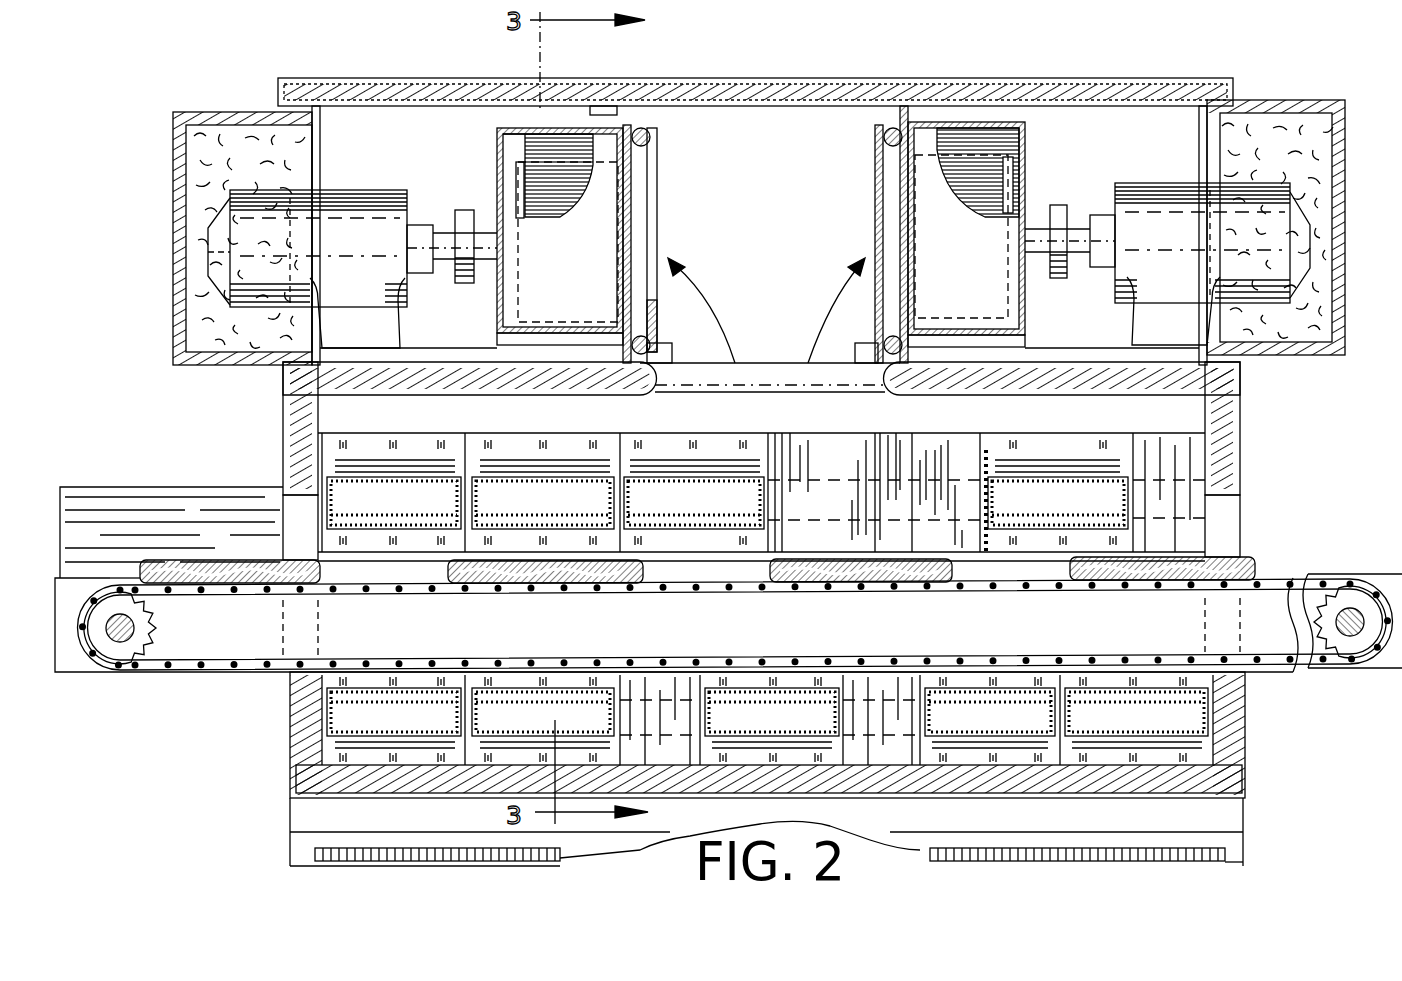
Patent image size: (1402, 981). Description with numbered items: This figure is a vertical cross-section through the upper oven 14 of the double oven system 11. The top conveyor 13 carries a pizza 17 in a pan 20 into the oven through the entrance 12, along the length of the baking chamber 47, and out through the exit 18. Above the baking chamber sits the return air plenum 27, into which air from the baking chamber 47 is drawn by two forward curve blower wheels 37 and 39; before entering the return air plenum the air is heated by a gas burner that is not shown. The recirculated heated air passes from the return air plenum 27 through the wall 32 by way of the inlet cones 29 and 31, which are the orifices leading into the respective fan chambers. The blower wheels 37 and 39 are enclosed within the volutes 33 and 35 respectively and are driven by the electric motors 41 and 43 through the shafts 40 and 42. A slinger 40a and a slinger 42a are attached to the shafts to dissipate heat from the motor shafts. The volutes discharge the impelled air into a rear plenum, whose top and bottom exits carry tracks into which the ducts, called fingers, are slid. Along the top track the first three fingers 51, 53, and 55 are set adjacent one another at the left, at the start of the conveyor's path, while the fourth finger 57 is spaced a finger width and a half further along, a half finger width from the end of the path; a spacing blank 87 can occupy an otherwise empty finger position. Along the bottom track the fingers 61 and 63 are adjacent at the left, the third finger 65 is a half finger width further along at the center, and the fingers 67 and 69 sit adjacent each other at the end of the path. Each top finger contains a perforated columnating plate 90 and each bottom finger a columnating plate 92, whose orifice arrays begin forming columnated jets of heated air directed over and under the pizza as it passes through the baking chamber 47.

The double oven system 11 is at (372, 78).
The entrance 12 is at (303, 520).
The top conveyor 13 is at (135, 590).
The upper oven 14 is at (1240, 416).
The pizza 17 is at (245, 575).
The exit 18 is at (1238, 506).
The pan 20 is at (150, 577).
The return air plenum 27 is at (787, 258).
The inlet cone 29 is at (843, 108).
The inlet cone 31 is at (672, 168).
The wall of return air plenum 32 is at (633, 126).
The volute 33 is at (1088, 108).
The volute 35 is at (466, 80).
The forward curve blower wheel 37 is at (969, 162).
The forward curve blower wheel 39 is at (554, 128).
The shaft 40 is at (1080, 252).
The slinger 40a is at (1058, 213).
The electric motor 41 is at (1258, 190).
The shaft 42 is at (446, 254).
The slinger 42a is at (463, 214).
The electric motor 43 is at (270, 218).
The baking chamber 47 is at (766, 482).
The upper duct (finger) 51 is at (400, 478).
The upper duct (finger) 53 is at (545, 478).
The upper duct (finger) 55 is at (698, 478).
The upper duct (finger) 57 is at (1061, 477).
The lower duct (finger) 61 is at (402, 670).
The lower duct (finger) 63 is at (545, 670).
The lower duct (finger) 65 is at (768, 670).
The lower duct (finger) 67 is at (1000, 670).
The lower duct (finger) 69 is at (1140, 670).
The spacing blank 87 is at (836, 446).
The columnating plate 90 is at (538, 512).
The columnating plate 92 is at (767, 688).